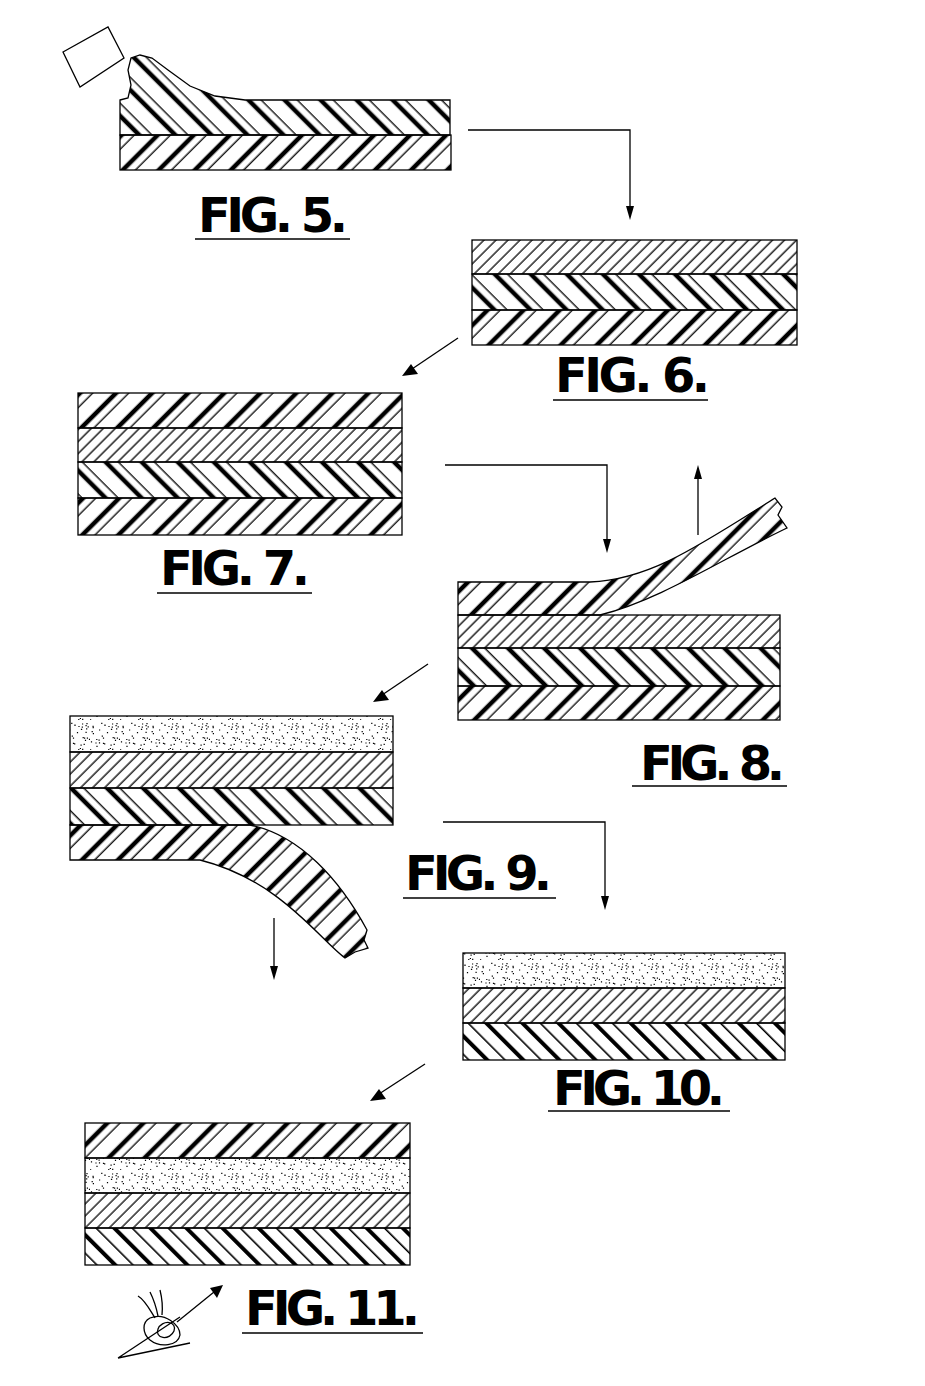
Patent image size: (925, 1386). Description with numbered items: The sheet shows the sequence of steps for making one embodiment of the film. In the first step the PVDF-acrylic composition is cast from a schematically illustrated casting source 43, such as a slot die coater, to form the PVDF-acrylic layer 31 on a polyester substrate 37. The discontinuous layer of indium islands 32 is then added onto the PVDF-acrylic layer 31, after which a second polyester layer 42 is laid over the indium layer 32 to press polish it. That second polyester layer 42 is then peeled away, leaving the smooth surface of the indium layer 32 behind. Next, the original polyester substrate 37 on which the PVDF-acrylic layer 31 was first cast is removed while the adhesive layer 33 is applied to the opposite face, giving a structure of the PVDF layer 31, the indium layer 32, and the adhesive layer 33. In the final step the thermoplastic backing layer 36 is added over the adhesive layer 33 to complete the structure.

In FIG. 5, the PVDF-acrylic layer 31 is at (256, 95).
In FIG. 6, the PVDF-acrylic layer 31 is at (662, 286).
In FIG. 7, the PVDF-acrylic layer 31 is at (213, 476).
In FIG. 8, the PVDF-acrylic layer 31 is at (649, 664).
In FIG. 9, the PVDF-acrylic layer 31 is at (209, 804).
In FIG. 10, the PVDF-acrylic layer 31 is at (652, 1036).
In FIG. 11, the PVDF-acrylic layer 31 is at (222, 1246).
In FIG. 6, the indium layer 32 is at (663, 250).
In FIG. 7, the indium layer 32 is at (213, 442).
In FIG. 8, the indium layer 32 is at (649, 625).
In FIG. 9, the indium layer 32 is at (209, 767).
In FIG. 10, the indium layer 32 is at (652, 1000).
In FIG. 11, the indium layer 32 is at (222, 1209).
In FIG. 9, the adhesive layer 33 is at (209, 732).
In FIG. 10, the adhesive layer 33 is at (652, 965).
In FIG. 11, the adhesive layer 33 is at (222, 1174).
In FIG. 11, the thermoplastic backing layer 36 is at (222, 1139).
In FIG. 5, the polyester substrate 37 is at (256, 147).
In FIG. 6, the polyester substrate 37 is at (662, 326).
In FIG. 7, the polyester substrate 37 is at (213, 512).
In FIG. 8, the polyester substrate 37 is at (649, 700).
In FIG. 9, the polyester substrate 37 is at (229, 891).
In FIG. 7, the second polyester layer 42 is at (213, 410).
In FIG. 8, the second polyester layer 42 is at (622, 546).
In FIG. 5, the casting source 43 is at (86, 51).